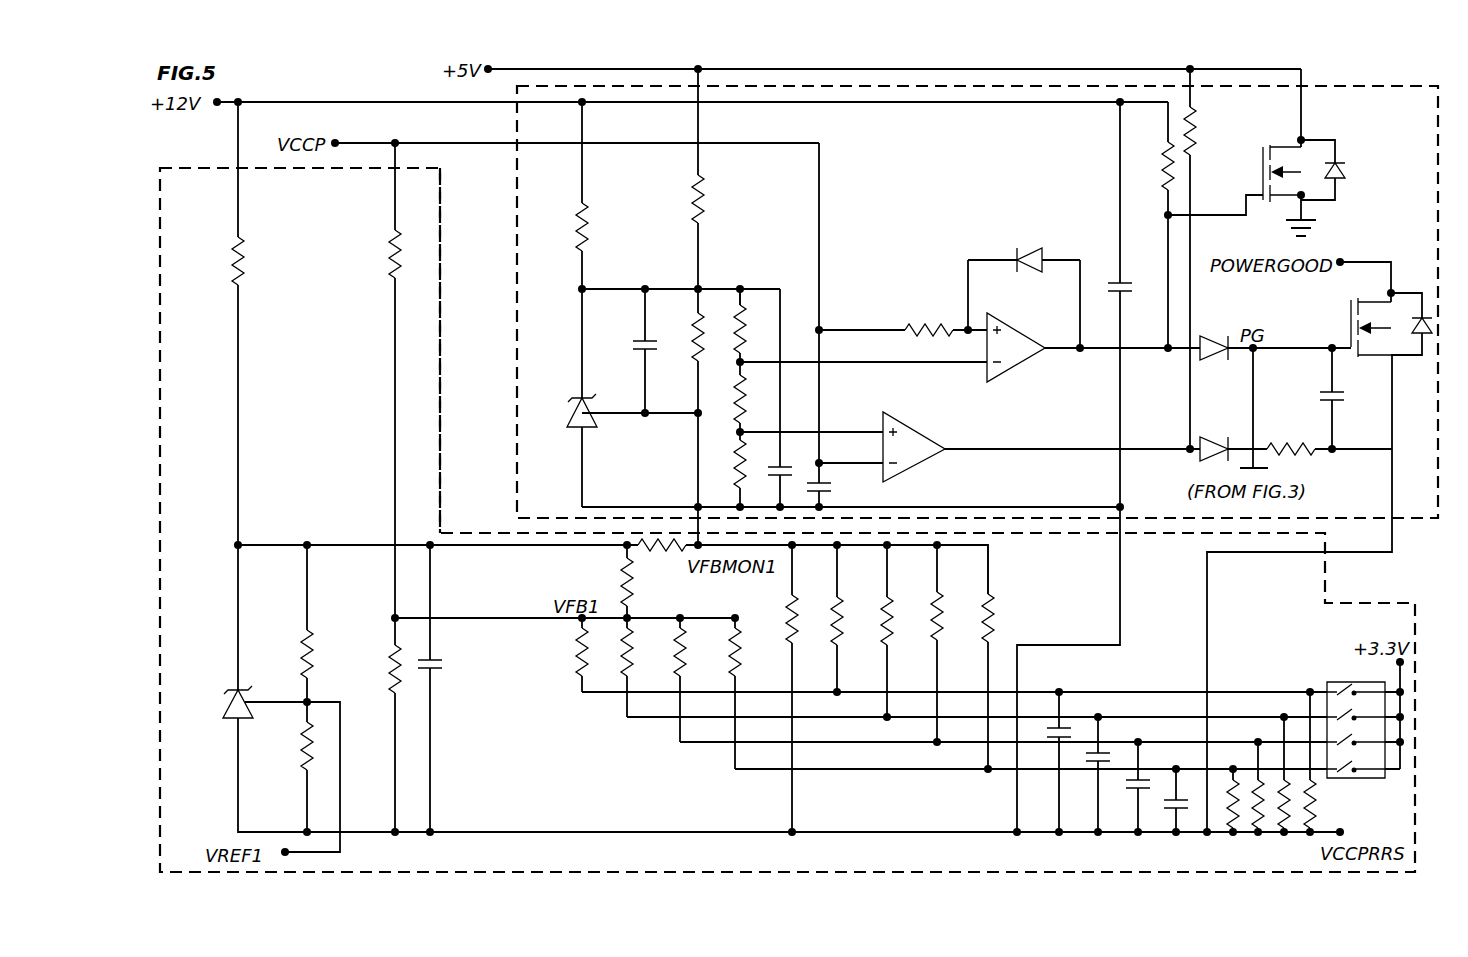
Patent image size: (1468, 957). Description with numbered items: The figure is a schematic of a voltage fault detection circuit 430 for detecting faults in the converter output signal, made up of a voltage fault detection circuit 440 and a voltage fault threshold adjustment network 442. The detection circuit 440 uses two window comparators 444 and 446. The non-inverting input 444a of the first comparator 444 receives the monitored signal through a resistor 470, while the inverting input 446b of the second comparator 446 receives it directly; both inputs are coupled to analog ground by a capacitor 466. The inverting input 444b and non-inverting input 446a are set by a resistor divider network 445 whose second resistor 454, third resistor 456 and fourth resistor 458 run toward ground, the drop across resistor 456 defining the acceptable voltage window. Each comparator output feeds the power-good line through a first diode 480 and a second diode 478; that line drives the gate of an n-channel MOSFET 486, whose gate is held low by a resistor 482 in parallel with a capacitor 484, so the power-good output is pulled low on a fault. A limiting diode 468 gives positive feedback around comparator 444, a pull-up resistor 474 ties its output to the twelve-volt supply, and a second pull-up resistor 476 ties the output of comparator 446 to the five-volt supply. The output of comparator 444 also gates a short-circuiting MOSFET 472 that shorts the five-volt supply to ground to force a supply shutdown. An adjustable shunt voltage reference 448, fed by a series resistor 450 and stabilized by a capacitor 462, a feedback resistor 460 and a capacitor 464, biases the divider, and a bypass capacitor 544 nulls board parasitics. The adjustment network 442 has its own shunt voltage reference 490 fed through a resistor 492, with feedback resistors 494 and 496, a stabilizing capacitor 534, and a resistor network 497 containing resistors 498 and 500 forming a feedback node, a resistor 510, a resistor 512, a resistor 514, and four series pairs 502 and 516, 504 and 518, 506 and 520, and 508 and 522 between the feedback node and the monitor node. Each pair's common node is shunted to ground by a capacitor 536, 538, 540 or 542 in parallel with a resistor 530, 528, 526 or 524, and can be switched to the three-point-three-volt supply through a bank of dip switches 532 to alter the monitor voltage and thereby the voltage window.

The voltage fault detection circuit 430 is at (1368, 581).
The voltage fault detection circuit 440 is at (515, 215).
The voltage fault threshold adjustment network 442 is at (445, 331).
The first window comparator 444 is at (1030, 355).
The non-inverting input of first comparator 444a is at (988, 322).
The inverting input of first comparator 444b is at (986, 362).
The resistor divider network 445 is at (725, 275).
The second window comparator 446 is at (923, 432).
The non-inverting input of second comparator 446a is at (882, 428).
The inverting input of second comparator 446b is at (880, 470).
The adjustable shunt voltage reference 448 is at (577, 405).
The series resistor 450 is at (586, 222).
The second resistor 454 is at (744, 305).
The third resistor 456 is at (738, 400).
The fourth resistor 458 is at (737, 452).
The feedback resistor 460 is at (697, 318).
The voltage stabilizing capacitor 462 is at (645, 340).
The stabilizing capacitor 464 is at (776, 480).
The capacitor 466 is at (823, 487).
The limiting diode 468 is at (1028, 248).
The resistor 470 is at (930, 325).
The short-circuiting MOSFET 472 is at (1325, 140).
The pull-up resistor 474 is at (1163, 165).
The second pull-up resistor 476 is at (1195, 140).
The second diode 478 is at (1200, 455).
The first diode 480 is at (1215, 362).
The resistor 482 is at (1300, 455).
The capacitor 484 is at (1325, 391).
The n-channel MOSFET 486 is at (1405, 293).
The shunt voltage reference 490 is at (236, 690).
The resistor 492 is at (234, 268).
The external feedback resistor 494 is at (312, 652).
The second external feedback resistor 496 is at (302, 745).
The resistor network 497 is at (998, 554).
The resistor 498 is at (390, 252).
The resistor 500 is at (391, 660).
The resistor 502 is at (577, 645).
The resistor 504 is at (620, 672).
The resistor 506 is at (673, 672).
The resistor 508 is at (733, 680).
The resistor 510 is at (622, 582).
The resistor 512 is at (652, 550).
The resistor 514 is at (786, 605).
The resistor 516 is at (842, 610).
The resistor 518 is at (890, 610).
The resistor 520 is at (940, 610).
The resistor 522 is at (995, 605).
The resistor 524 is at (1228, 800).
The resistor 526 is at (1258, 815).
The resistor 528 is at (1283, 780).
The resistor 530 is at (1317, 812).
The bank of dip switches 532 is at (1340, 682).
The stabilizing capacitor 534 is at (441, 667).
The stabilizing capacitor 536 is at (1064, 725).
The stabilizing capacitor 538 is at (1103, 752).
The stabilizing capacitor 540 is at (1143, 780).
The stabilizing capacitor 542 is at (1172, 810).
The bypass capacitor 544 is at (1124, 283).